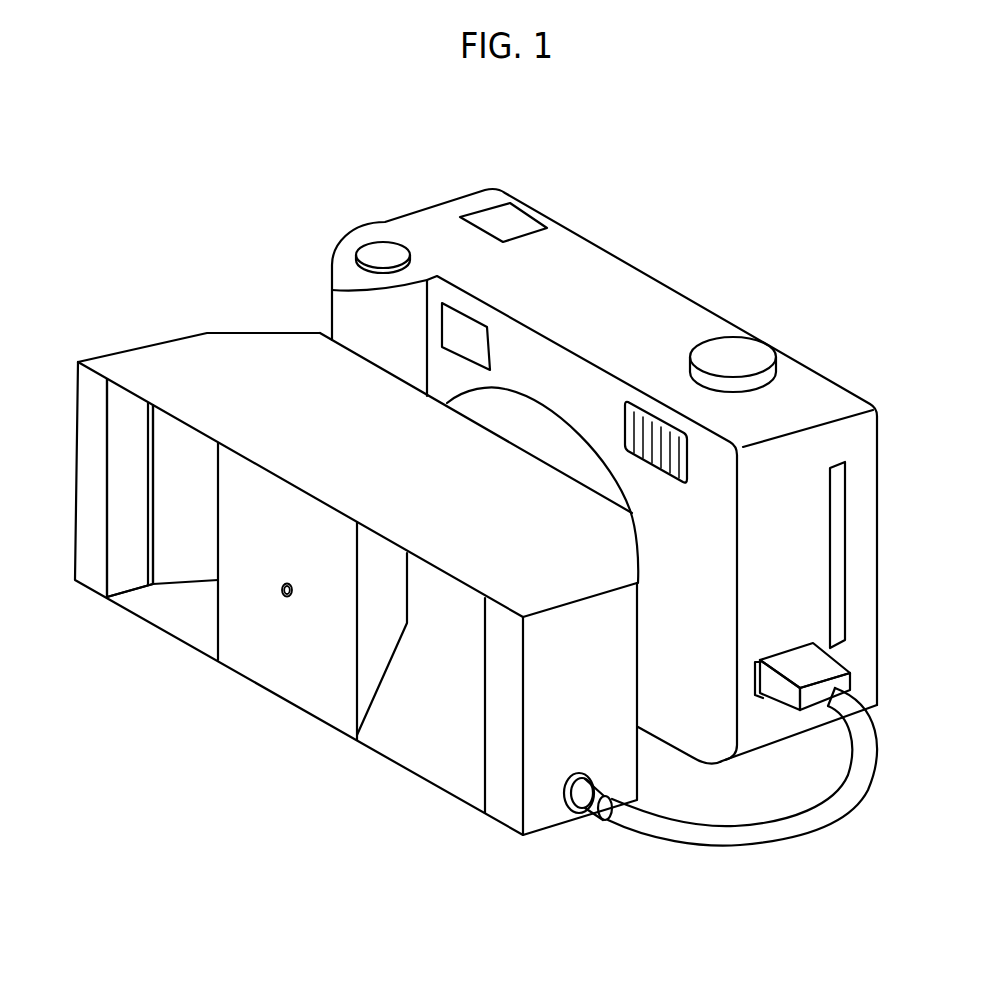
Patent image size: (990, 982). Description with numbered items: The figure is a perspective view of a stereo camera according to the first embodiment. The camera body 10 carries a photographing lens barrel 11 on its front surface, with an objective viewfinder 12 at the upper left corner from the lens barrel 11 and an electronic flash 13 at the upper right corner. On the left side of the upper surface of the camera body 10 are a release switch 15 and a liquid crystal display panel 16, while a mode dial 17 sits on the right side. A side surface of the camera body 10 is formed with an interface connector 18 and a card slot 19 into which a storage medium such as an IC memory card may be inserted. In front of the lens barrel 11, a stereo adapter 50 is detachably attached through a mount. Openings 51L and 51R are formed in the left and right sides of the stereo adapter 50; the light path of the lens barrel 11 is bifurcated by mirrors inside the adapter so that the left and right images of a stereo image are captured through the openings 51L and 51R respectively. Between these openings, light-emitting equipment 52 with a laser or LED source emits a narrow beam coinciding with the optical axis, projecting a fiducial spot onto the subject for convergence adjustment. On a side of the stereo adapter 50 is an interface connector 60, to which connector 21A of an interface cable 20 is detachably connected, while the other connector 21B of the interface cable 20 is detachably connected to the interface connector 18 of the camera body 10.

The camera body 10 is at (680, 705).
The photographing lens barrel 11 is at (530, 427).
The viewfinder 12 is at (447, 340).
The electronic flash 13 is at (652, 472).
The release switch 15 is at (385, 252).
The liquid crystal display panel 16 is at (502, 222).
The mode dial 17 is at (733, 357).
The interface connector 18 is at (788, 643).
The card slot 19 is at (840, 502).
The interface cable 20 is at (777, 847).
The connector 21A is at (583, 800).
The connector 21B is at (845, 683).
The stereo adapter 50 is at (248, 368).
The opening 51R is at (178, 603).
The opening 51L is at (430, 742).
The light-emitting equipment 52 is at (280, 595).
The interface connector 60 is at (562, 798).